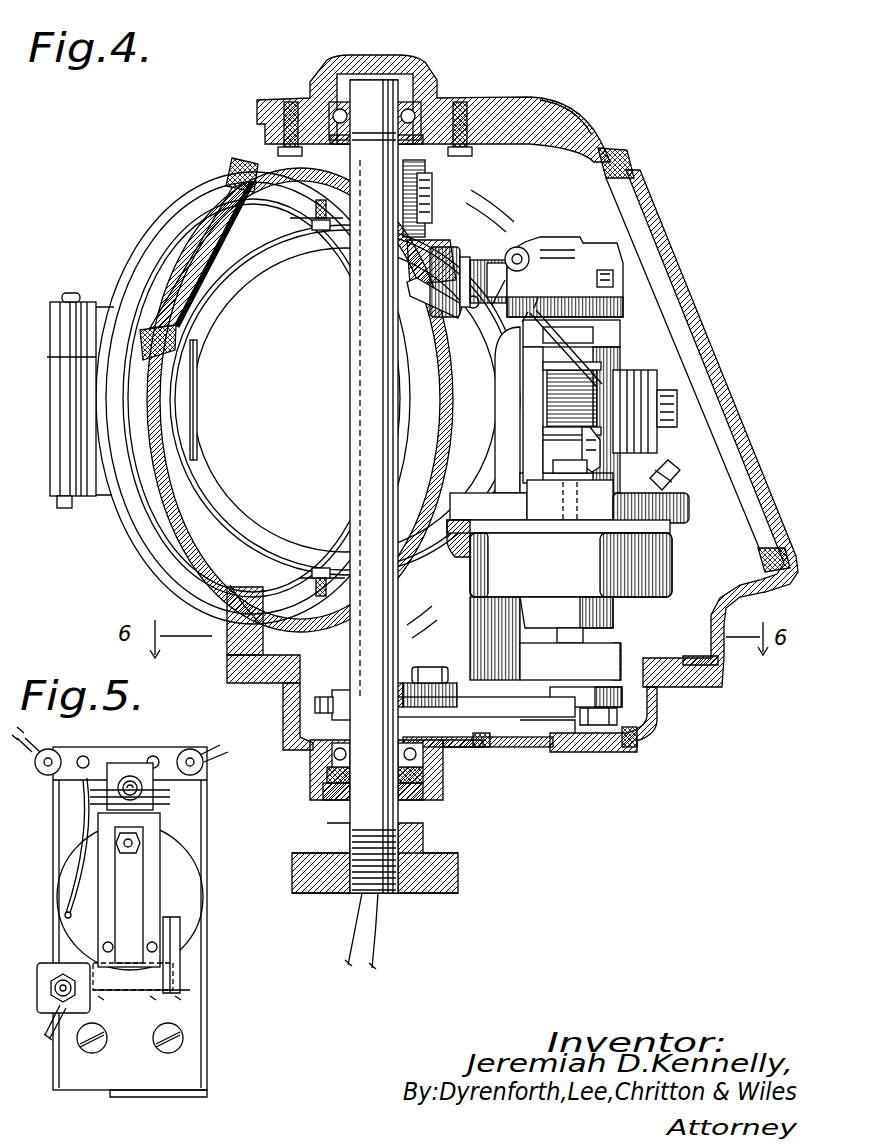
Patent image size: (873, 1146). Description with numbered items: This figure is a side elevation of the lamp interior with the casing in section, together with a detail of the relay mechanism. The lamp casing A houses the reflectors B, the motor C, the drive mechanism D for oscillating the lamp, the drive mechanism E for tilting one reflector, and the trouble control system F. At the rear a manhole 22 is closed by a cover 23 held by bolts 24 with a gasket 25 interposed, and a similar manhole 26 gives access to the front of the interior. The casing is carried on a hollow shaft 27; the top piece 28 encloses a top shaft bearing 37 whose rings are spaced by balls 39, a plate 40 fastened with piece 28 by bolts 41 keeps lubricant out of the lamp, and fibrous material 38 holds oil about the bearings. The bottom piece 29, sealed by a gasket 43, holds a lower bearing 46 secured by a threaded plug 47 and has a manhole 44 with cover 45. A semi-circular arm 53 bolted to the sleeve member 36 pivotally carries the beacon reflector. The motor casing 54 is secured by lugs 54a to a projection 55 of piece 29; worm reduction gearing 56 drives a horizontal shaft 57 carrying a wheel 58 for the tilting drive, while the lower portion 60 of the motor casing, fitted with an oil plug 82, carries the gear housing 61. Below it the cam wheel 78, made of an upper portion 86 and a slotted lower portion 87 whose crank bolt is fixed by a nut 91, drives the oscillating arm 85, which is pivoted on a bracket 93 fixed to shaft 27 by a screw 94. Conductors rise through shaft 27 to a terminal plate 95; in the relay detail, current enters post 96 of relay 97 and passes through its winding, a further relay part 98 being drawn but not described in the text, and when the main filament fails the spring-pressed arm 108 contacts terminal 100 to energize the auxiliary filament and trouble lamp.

In FIG. 4, the manhole 22 is at (624, 205).
In FIG. 4, the cover 23 is at (660, 400).
In FIG. 4, the bolts 24 is at (627, 167).
In FIG. 4, the gasket 25 is at (606, 142).
In FIG. 4, the manhole 26 is at (235, 205).
In FIG. 4, the hollow shaft 27 is at (375, 301).
In FIG. 4, the top piece 28 is at (395, 62).
In FIG. 4, the bottom piece 29 is at (652, 723).
In FIG. 4, the sleeve member 36 is at (268, 586).
In FIG. 4, the top shaft bearing 37 is at (430, 100).
In FIG. 4, the fibrous material 38 is at (345, 78).
In FIG. 4, the balls 39 is at (415, 118).
In FIG. 4, the plate 40 is at (505, 130).
In FIG. 4, the bolts 41 is at (292, 156).
In FIG. 4, the gasket 43 is at (228, 663).
In FIG. 4, the manhole 44 is at (592, 747).
In FIG. 4, the cover 45 is at (577, 747).
In FIG. 4, the lower bearing 46 is at (420, 757).
In FIG. 4, the threaded plug 47 is at (436, 798).
In FIG. 4, the semi-circular arm 53 is at (322, 202).
In FIG. 4, the motor casing 54 is at (492, 372).
In FIG. 4, the lugs 54a is at (560, 510).
In FIG. 4, the projection 55 is at (447, 548).
In FIG. 4, the reduction gearing 56 is at (540, 237).
In FIG. 4, the horizontal shaft 57 is at (500, 250).
In FIG. 4, the wheel 58 is at (455, 250).
In FIG. 4, the lower portion of the motor casing 60 is at (690, 504).
In FIG. 4, the gear housing 61 is at (652, 551).
In FIG. 4, the cam wheel 78 is at (623, 650).
In FIG. 4, the plug 82 is at (668, 482).
In FIG. 4, the oscillating arm 85 is at (532, 747).
In FIG. 4, the upper portion 86 is at (612, 645).
In FIG. 4, the lower portion 87 is at (618, 690).
In FIG. 4, the nut 91 is at (618, 713).
In FIG. 4, the bracket 93 is at (335, 714).
In FIG. 4, the screw 94 is at (315, 705).
In FIG. 4, the terminal plate 95 is at (427, 200).
In FIG. 4, the post 96 is at (497, 305).
In FIG. 5, the post 96 is at (55, 760).
In FIG. 4, the relay 97 is at (550, 395).
In FIG. 5, the relay 97 is at (195, 977).
In FIG. 4, the contact 98 is at (590, 447).
In FIG. 5, the contact 98 is at (58, 985).
In FIG. 5, the terminal 100 is at (193, 750).
In FIG. 4, the arm 108 is at (645, 405).
In FIG. 5, the arm 108 is at (135, 888).
In FIG. 4, the lamp casing A is at (555, 108).
In FIG. 4, the reflectors B is at (308, 403).
In FIG. 4, the motor C is at (645, 333).
In FIG. 4, the drive mechanism for oscillating the lamp D is at (546, 760).
In FIG. 4, the drive mechanism for tilting one of the reflectors E is at (446, 306).
In FIG. 4, the trouble control system F is at (600, 395).